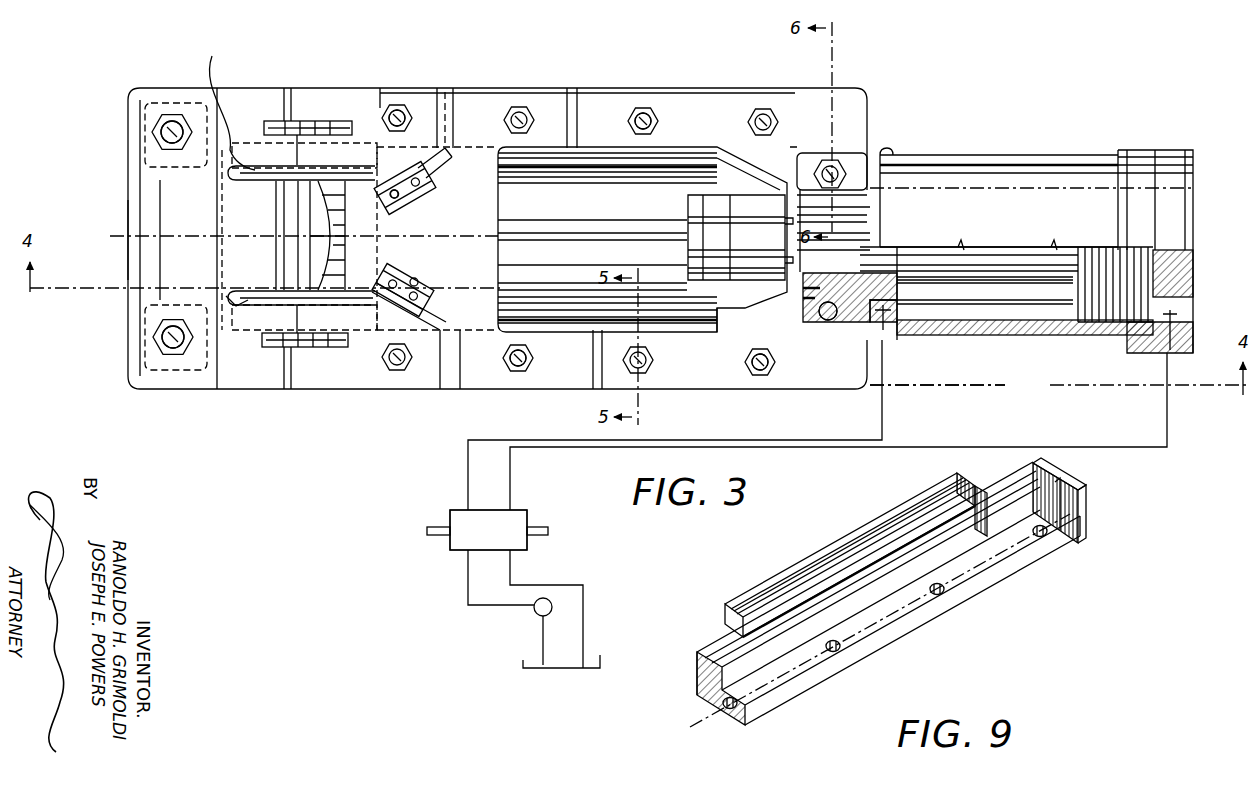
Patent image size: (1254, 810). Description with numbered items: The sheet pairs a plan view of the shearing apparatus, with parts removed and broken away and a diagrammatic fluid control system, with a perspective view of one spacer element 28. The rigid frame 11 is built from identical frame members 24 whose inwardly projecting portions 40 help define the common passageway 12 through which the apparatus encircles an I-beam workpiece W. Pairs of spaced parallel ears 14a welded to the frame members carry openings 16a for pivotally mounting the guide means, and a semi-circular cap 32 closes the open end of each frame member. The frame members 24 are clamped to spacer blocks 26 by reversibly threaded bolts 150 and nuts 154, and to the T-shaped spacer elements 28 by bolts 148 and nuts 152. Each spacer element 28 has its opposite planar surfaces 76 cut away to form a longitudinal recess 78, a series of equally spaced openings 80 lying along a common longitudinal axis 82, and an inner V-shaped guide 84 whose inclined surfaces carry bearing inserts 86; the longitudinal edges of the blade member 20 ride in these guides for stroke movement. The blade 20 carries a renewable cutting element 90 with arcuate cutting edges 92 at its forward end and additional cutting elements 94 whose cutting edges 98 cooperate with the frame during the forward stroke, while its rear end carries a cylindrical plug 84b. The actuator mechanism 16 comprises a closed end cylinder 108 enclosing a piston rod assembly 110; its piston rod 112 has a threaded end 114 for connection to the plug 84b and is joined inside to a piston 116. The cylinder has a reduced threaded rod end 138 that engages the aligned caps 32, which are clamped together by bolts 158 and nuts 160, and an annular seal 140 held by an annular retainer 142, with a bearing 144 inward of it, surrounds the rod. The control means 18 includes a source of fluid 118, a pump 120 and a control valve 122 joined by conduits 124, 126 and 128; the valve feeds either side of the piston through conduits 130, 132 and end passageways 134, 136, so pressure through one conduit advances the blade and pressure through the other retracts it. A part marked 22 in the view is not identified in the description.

In FIG. 3, the rigid frame 11 is at (468, 100).
In FIG. 3, the passageway 12 is at (232, 301).
In FIG. 3, the ears 14a is at (284, 121).
In FIG. 3, the openings 16a is at (308, 123).
In FIG. 3, the actuator mechanism 16 is at (1067, 202).
In FIG. 3, the control means 18 is at (452, 502).
In FIG. 3, the blade member 20 is at (560, 266).
In FIG. 3, the base 22 is at (120, 240).
In FIG. 3, the frame members 24 is at (274, 117).
In FIG. 3, the spacer elements 26 is at (150, 153).
In FIG. 9, the spacer members 28 is at (699, 675).
In FIG. 3, the semi-circular cap 32 is at (840, 204).
In FIG. 3, the inwardly projecting portion 40 is at (264, 230).
In FIG. 9, the planar surfaces 76 is at (1075, 486).
In FIG. 9, the recess 78 is at (1050, 469).
In FIG. 9, the openings 80 is at (1043, 538).
In FIG. 9, the longitudinal axis 82 is at (882, 618).
In FIG. 9, the V-shaped guide 84 is at (836, 563).
In FIG. 3, the cylindrical plug 84b is at (725, 212).
In FIG. 9, the bearing insert 86 is at (796, 598).
In FIG. 3, the renewable cutting element 90 is at (333, 190).
In FIG. 3, the cutting edges 92 is at (330, 228).
In FIG. 3, the additional cutting elements 94 is at (401, 212).
In FIG. 3, the cutting edges 98 is at (430, 194).
In FIG. 3, the closed end cylinder 108 is at (956, 385).
In FIG. 3, the piston rod assembly 110 is at (1030, 328).
In FIG. 3, the piston rod 112 is at (952, 280).
In FIG. 3, the threaded end 114 is at (808, 153).
In FIG. 3, the piston 116 is at (1150, 269).
In FIG. 3, the source of fluid 118 is at (531, 662).
In FIG. 3, the pump 120 is at (537, 615).
In FIG. 3, the control valve 122 is at (510, 520).
In FIG. 3, the conduit 124 is at (466, 594).
In FIG. 3, the conduit 126 is at (584, 590).
In FIG. 3, the conduit 128 is at (546, 628).
In FIG. 3, the conduit 130 is at (884, 406).
In FIG. 3, the conduit 132 is at (1070, 447).
In FIG. 3, the passageway 134 is at (886, 324).
In FIG. 3, the passageway 136 is at (1175, 320).
In FIG. 3, the threaded rod end 138 is at (870, 266).
In FIG. 3, the annular seal 140 is at (812, 272).
In FIG. 3, the annular retainer 142 is at (810, 332).
In FIG. 3, the bearing 144 is at (850, 283).
In FIG. 3, the bolt 148 is at (397, 108).
In FIG. 3, the bolt 150 is at (163, 130).
In FIG. 3, the nuts 152 is at (399, 108).
In FIG. 3, the nuts 154 is at (170, 116).
In FIG. 3, the bolts 158 is at (855, 153).
In FIG. 3, the nuts 160 is at (834, 160).
In FIG. 3, the workpiece W is at (232, 104).